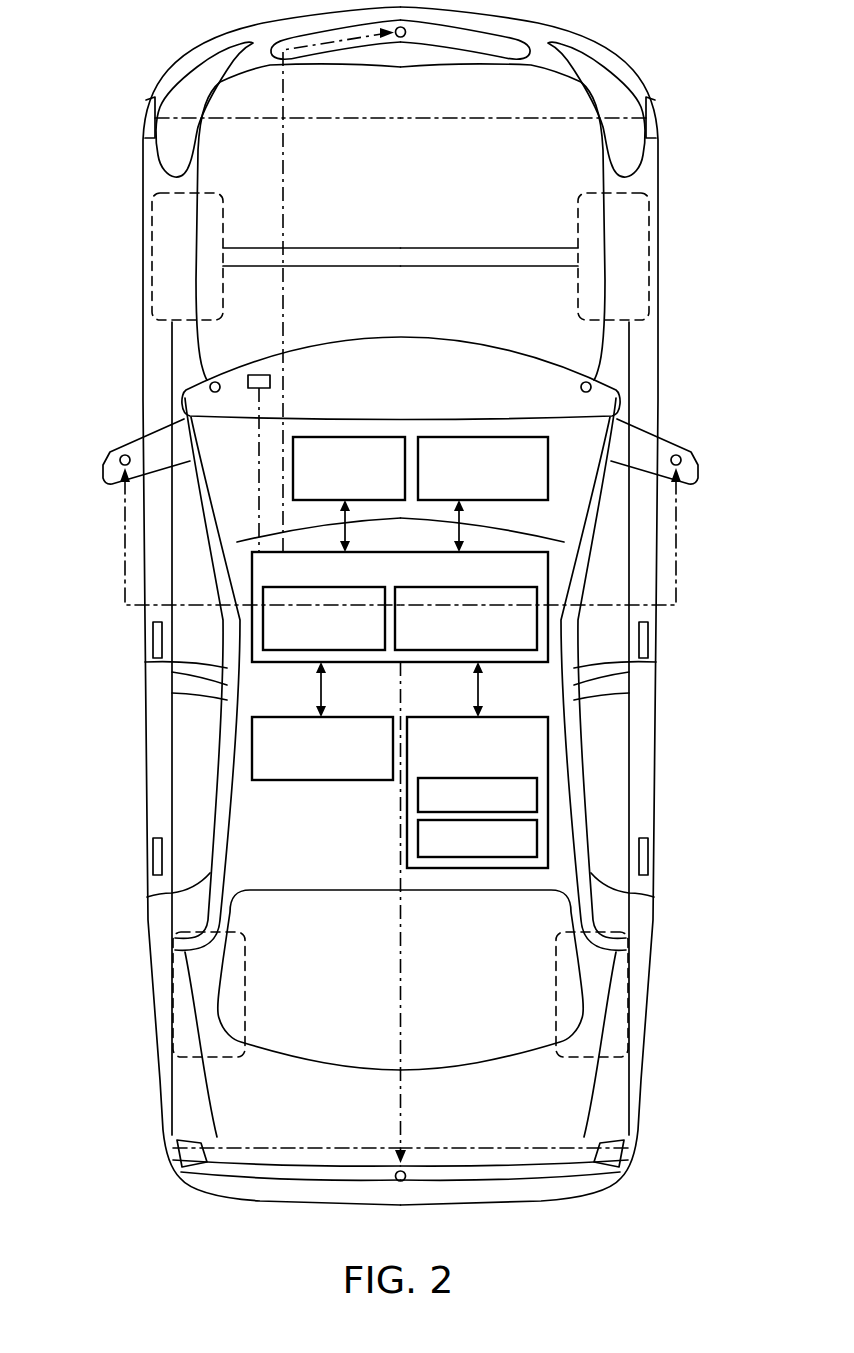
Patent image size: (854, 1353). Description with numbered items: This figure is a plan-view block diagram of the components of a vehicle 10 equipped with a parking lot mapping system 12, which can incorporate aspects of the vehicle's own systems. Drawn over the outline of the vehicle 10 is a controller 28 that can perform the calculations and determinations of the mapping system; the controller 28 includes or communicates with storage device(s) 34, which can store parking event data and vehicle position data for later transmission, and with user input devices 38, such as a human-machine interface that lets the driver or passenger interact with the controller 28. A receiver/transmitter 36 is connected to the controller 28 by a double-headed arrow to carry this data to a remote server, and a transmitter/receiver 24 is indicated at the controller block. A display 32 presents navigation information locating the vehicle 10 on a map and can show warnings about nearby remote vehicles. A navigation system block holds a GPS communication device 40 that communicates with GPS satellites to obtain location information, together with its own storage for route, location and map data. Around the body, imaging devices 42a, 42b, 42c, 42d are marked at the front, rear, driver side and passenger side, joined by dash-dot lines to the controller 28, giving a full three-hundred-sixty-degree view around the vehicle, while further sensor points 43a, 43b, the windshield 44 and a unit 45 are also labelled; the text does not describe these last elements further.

The vehicle 10 is at (711, 239).
The parking lot mapping system 12 is at (562, 444).
The transmitter/receiver 24 is at (407, 608).
The controller 28 is at (511, 775).
The display 32 is at (308, 717).
The storage device(s) 34 is at (355, 651).
The receiver/transmitter 36 is at (437, 651).
The user input devices 38 is at (537, 792).
The communication device 40 is at (537, 838).
The front camera 42a is at (403, 37).
The rear camera 42b is at (397, 1181).
The left side mirror camera 42c is at (122, 456).
The right side mirror camera 42d is at (679, 456).
The left sensor 43a is at (210, 386).
The right sensor 43b is at (591, 386).
The windshield 44 is at (360, 363).
The rearview mirror unit 45 is at (255, 375).